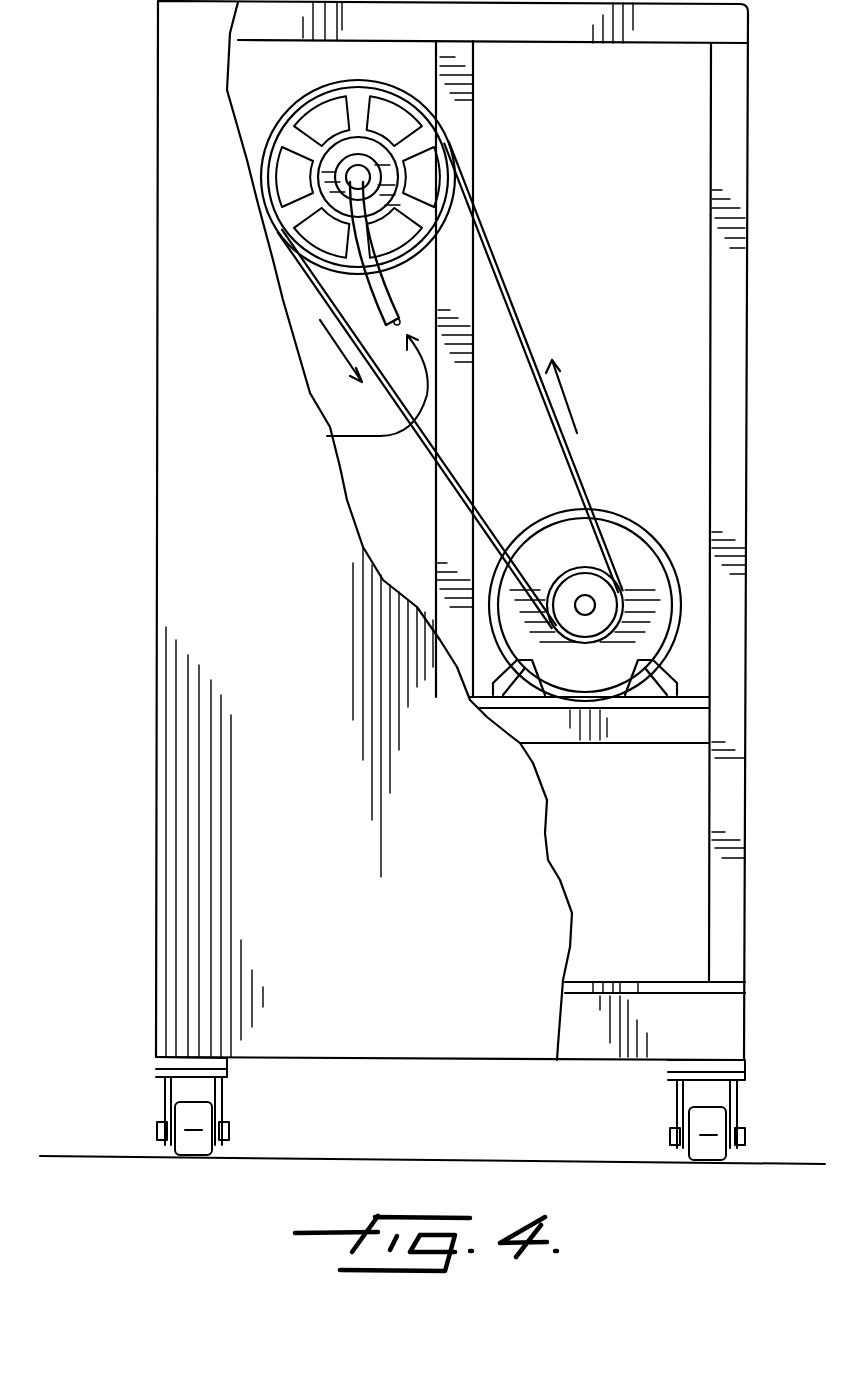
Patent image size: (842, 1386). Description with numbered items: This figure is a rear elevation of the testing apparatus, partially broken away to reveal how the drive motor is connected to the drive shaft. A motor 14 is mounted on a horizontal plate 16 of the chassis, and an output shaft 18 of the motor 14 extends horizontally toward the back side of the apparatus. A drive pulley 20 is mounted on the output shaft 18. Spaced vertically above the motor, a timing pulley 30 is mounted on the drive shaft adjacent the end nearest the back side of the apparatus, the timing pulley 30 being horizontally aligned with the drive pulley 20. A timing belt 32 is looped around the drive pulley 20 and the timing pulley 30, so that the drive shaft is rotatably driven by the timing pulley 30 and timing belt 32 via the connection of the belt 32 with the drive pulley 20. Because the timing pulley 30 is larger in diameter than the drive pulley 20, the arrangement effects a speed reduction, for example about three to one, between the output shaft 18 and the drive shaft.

The motor 14 is at (643, 528).
The horizontal plate 16 is at (626, 733).
The output shaft 18 is at (590, 603).
The drive pulley 20 is at (560, 567).
The timing pulley 30 is at (317, 100).
The timing belt 32 is at (437, 458).